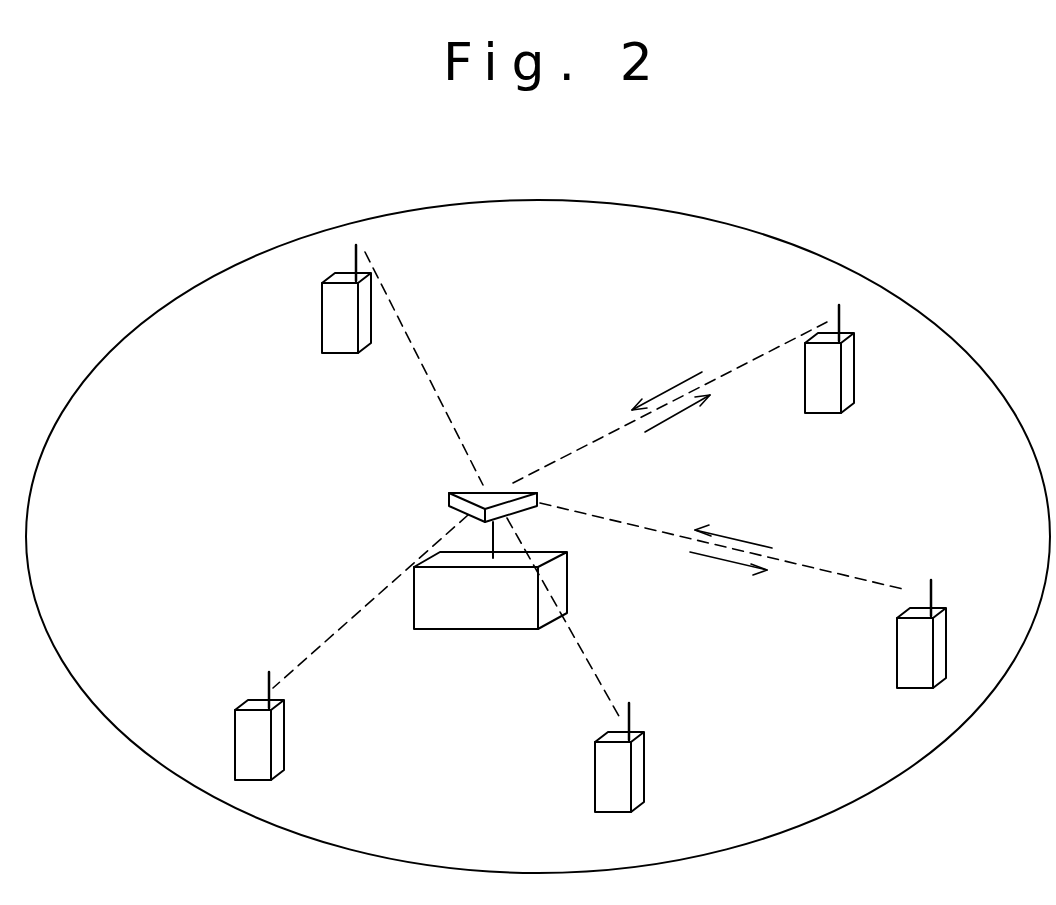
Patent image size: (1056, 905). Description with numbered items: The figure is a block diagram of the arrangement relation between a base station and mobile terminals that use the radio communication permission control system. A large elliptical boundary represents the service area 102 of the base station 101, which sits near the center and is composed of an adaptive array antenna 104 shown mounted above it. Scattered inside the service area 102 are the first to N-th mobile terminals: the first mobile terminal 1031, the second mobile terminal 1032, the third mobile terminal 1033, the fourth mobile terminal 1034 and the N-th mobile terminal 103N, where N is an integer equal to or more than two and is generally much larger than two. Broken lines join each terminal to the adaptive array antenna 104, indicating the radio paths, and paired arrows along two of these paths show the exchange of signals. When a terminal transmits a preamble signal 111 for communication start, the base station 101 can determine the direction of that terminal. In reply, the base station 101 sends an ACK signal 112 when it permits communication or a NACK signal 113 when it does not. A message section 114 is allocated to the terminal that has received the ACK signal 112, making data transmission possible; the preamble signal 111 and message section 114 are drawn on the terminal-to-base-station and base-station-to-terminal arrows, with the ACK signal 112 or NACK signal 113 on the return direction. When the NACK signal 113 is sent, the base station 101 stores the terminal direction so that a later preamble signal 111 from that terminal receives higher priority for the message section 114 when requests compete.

The base station 101 is at (555, 587).
The service area 102 is at (833, 258).
The first mobile terminal 1031 is at (340, 312).
The second mobile terminal 1032 is at (847, 375).
The third mobile terminal 1033 is at (938, 650).
The fourth mobile terminal 1034 is at (637, 772).
The N-th mobile terminal 103N is at (277, 738).
The adaptive array antenna 104 is at (493, 498).
The preamble signal 111 is at (708, 454).
The ACK signal 112 is at (715, 513).
The NACK signal 113 is at (678, 410).
The message section 114 is at (678, 388).